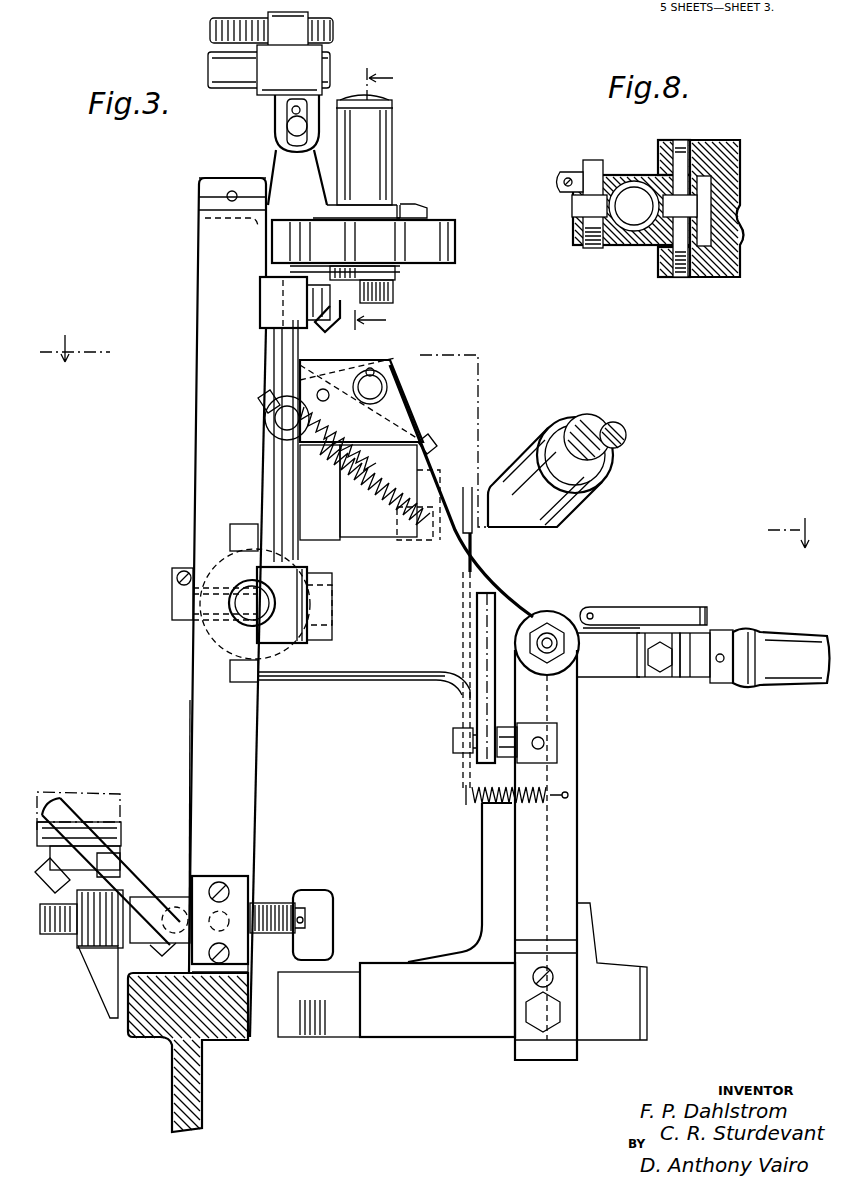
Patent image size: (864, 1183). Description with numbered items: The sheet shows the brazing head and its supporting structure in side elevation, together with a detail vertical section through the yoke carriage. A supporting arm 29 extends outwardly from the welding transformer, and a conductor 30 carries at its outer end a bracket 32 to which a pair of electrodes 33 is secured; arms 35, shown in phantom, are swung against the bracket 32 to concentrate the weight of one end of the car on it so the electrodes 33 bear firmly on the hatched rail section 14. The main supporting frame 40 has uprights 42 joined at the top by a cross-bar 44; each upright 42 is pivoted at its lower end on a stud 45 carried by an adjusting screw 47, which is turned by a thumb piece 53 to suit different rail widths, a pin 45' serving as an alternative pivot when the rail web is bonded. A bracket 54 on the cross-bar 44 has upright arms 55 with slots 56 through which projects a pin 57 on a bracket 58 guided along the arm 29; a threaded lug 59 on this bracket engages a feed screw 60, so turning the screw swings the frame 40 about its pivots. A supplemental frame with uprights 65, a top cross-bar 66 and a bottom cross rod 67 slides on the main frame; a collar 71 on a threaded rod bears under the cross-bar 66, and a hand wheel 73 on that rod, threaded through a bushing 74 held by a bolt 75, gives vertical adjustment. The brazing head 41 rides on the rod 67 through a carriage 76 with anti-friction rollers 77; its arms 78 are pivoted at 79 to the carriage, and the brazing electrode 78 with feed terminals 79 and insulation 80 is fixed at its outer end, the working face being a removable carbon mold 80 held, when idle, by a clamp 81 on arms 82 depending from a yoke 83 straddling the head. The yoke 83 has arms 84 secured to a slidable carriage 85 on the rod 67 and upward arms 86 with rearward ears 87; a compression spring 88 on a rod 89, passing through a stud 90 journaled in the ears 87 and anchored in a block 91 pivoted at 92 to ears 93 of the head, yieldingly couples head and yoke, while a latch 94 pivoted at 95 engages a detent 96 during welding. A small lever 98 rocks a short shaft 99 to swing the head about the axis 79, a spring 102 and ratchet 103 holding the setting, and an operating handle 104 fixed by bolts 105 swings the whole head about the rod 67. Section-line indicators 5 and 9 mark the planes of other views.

In FIG. 3, the section line 5- 5 is at (434, 435).
In FIG. 3, the section line 9- 9 is at (382, 200).
In FIG. 3, the table 14 is at (175, 1085).
In FIG. 3, the supporting arm 29 is at (222, 62).
In FIG. 3, the conductor 30 is at (57, 812).
In FIG. 3, the bracket 32 is at (120, 817).
In FIG. 3, the electrodes 33 is at (103, 970).
In FIG. 3, the arms 35 is at (53, 790).
In FIG. 3, the main supporting frame 40 is at (196, 440).
In FIG. 3, the brazing head 41 is at (377, 683).
In FIG. 3, the upright 42 is at (237, 790).
In FIG. 3, the cross-bar 44 is at (216, 222).
In FIG. 3, the stud 45 is at (220, 902).
In FIG. 3, the pin 45' is at (160, 901).
In FIG. 3, the adjusting screw 47 is at (277, 903).
In FIG. 3, the thumb piece 53 is at (333, 898).
In FIG. 3, the bracket 54 is at (202, 188).
In FIG. 3, the upright arms 55 is at (297, 150).
In FIG. 3, the slots 56 is at (283, 115).
In FIG. 3, the pin 57 is at (287, 128).
In FIG. 3, the bracket 58 is at (289, 70).
In FIG. 3, the lug 59 is at (298, 25).
In FIG. 3, the feed screw 60 is at (210, 30).
In FIG. 3, the uprights 65 is at (287, 473).
In FIG. 3, the top cross-bar 66 is at (268, 293).
In FIG. 3, the bottom cross rod 67 is at (267, 617).
In FIG. 8, the bottom cross rod 67 is at (634, 206).
In FIG. 3, the collar 71 is at (393, 292).
In FIG. 3, the hand wheel 73 is at (455, 225).
In FIG. 3, the bushing 74 is at (380, 155).
In FIG. 3, the bolt 75 is at (420, 205).
In FIG. 3, the carriage 76 is at (220, 557).
In FIG. 3, the anti-friction rollers 77 is at (172, 598).
In FIG. 3, the brazing electrode 78 is at (228, 533).
In FIG. 3, the feed terminals 79 is at (626, 437).
In FIG. 3, the carbon mold 80 is at (260, 1047).
In FIG. 3, the clamp 81 is at (350, 1027).
In FIG. 3, the arms 82 is at (570, 880).
In FIG. 3, the yoke 83 is at (507, 600).
In FIG. 8, the yoke 83 is at (742, 232).
In FIG. 3, the arms 84 is at (312, 558).
In FIG. 8, the arms 84 is at (742, 158).
In FIG. 8, the slidable carriage 85 is at (628, 175).
In FIG. 3, the upwardly extending arms 86 is at (430, 440).
In FIG. 3, the ears 87 is at (300, 380).
In FIG. 3, the compression spring 88 is at (368, 481).
In FIG. 3, the rod 89 is at (392, 455).
In FIG. 3, the stud 90 is at (267, 413).
In FIG. 3, the block 91 is at (402, 545).
In FIG. 3, the pivot 92 is at (432, 545).
In FIG. 3, the ears 93 is at (375, 530).
In FIG. 3, the latch 94 is at (361, 394).
In FIG. 3, the pivot 95 is at (390, 372).
In FIG. 3, the detent 96 is at (340, 323).
In FIG. 3, the small lever 98 is at (695, 607).
In FIG. 3, the short shaft 99 is at (593, 607).
In FIG. 3, the spring 102 is at (665, 640).
In FIG. 3, the ratchet 103 is at (628, 633).
In FIG. 3, the operating handle 104 is at (803, 670).
In FIG. 3, the bolts 105 is at (663, 673).